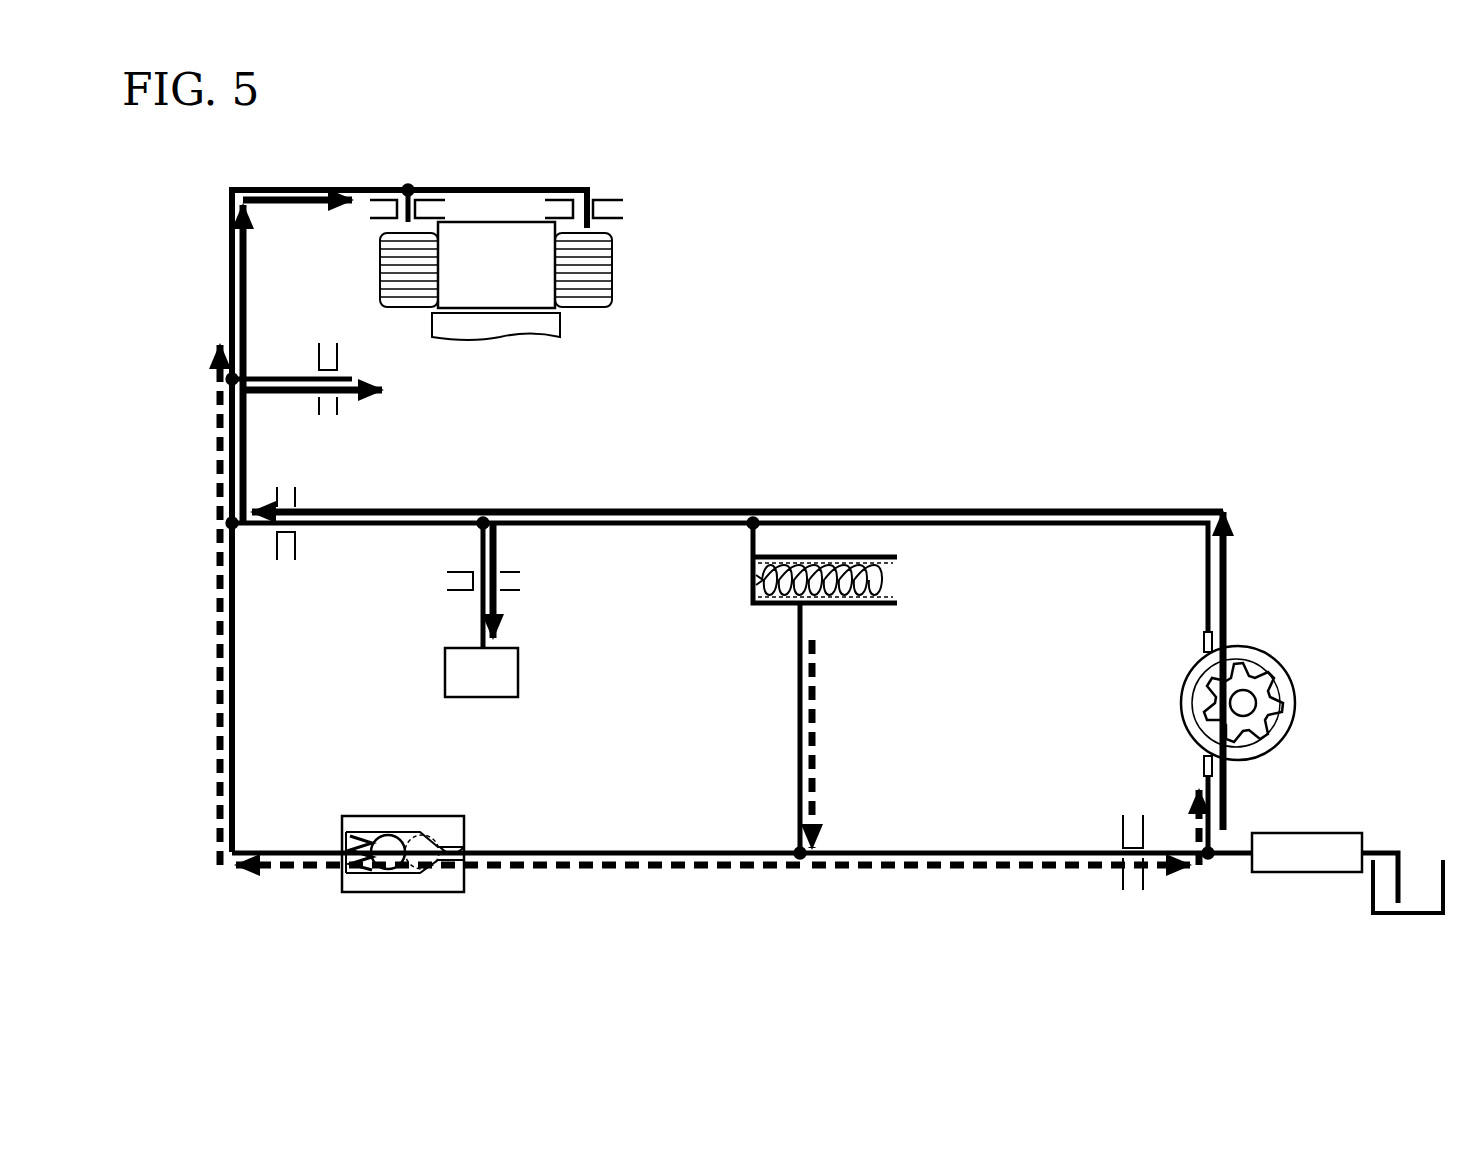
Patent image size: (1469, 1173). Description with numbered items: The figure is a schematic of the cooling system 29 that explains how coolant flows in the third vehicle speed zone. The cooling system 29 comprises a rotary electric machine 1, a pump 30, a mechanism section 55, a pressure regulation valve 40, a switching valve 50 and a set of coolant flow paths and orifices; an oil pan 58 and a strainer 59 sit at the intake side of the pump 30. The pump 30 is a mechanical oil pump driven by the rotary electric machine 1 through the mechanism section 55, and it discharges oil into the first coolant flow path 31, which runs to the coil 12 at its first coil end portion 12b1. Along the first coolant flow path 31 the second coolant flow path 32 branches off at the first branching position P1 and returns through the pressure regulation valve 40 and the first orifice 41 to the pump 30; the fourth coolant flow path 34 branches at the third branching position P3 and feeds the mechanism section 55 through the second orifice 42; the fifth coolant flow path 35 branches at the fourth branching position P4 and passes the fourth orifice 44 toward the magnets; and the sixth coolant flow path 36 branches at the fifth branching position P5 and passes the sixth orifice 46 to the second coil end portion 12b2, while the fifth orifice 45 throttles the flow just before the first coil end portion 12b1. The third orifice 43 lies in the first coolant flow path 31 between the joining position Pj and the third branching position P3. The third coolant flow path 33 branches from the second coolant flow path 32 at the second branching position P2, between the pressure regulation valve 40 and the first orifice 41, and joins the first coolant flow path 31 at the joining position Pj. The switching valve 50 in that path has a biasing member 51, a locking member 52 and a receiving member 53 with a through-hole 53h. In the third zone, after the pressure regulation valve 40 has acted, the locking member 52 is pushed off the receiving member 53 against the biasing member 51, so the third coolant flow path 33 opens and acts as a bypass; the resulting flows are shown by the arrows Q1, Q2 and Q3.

The rotary electric machine 1 is at (497, 278).
The coil 12 is at (490, 281).
The first coil end portion 12b1 is at (380, 266).
The second coil end portion 12b2 is at (610, 291).
The cooling system 29 is at (1200, 232).
The pump 30 is at (1295, 690).
The first coolant flow path 31 is at (1068, 527).
The second coolant flow path 32 is at (797, 712).
The third coolant flow path 33 is at (620, 851).
The fourth coolant flow path 34 is at (480, 550).
The fifth coolant flow path 35 is at (290, 378).
The sixth coolant flow path 36 is at (545, 190).
The pressure regulation valve 40 is at (856, 605).
The first orifice 41 is at (1125, 880).
The second orifice 42 is at (505, 592).
The third orifice 43 is at (298, 545).
The fourth orifice 44 is at (337, 360).
The fifth orifice 45 is at (383, 220).
The sixth orifice 46 is at (610, 205).
The switching valve 50 is at (435, 856).
The biasing member 51 is at (360, 835).
The locking member 52 is at (388, 840).
The receiving member 53 is at (440, 830).
The through-hole 53h is at (452, 850).
The mechanism section 55 is at (518, 672).
The oil pan 58 is at (1410, 915).
The strainer 59 is at (1305, 874).
The first branching position P1 is at (748, 528).
The second branching position P2 is at (800, 866).
The third branching position P3 is at (478, 526).
The fourth branching position P4 is at (226, 380).
The fifth branching position P5 is at (408, 188).
The joining position Pj is at (236, 528).
The arrow Q1 is at (248, 255).
The arrow Q2 is at (816, 762).
The arrow Q3 is at (220, 780).